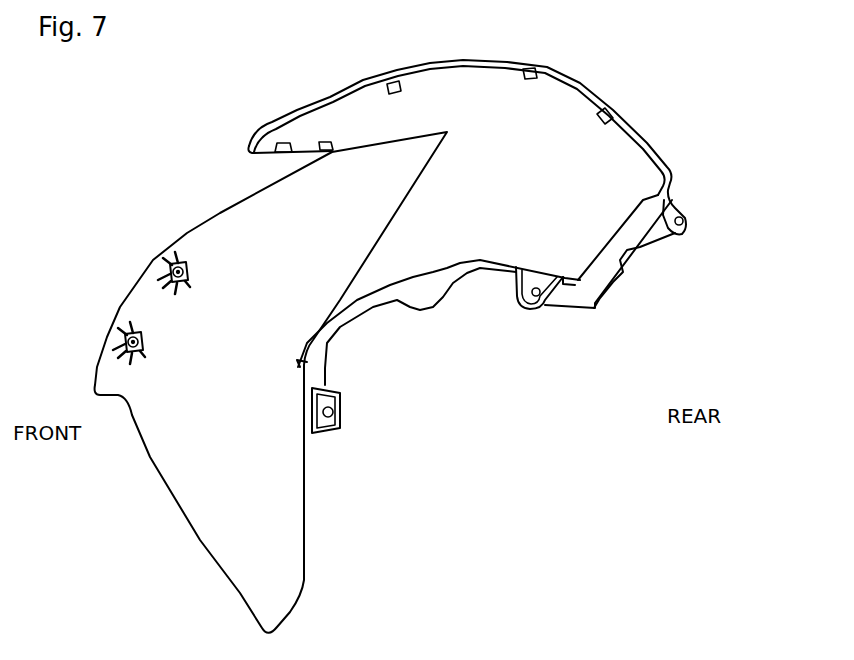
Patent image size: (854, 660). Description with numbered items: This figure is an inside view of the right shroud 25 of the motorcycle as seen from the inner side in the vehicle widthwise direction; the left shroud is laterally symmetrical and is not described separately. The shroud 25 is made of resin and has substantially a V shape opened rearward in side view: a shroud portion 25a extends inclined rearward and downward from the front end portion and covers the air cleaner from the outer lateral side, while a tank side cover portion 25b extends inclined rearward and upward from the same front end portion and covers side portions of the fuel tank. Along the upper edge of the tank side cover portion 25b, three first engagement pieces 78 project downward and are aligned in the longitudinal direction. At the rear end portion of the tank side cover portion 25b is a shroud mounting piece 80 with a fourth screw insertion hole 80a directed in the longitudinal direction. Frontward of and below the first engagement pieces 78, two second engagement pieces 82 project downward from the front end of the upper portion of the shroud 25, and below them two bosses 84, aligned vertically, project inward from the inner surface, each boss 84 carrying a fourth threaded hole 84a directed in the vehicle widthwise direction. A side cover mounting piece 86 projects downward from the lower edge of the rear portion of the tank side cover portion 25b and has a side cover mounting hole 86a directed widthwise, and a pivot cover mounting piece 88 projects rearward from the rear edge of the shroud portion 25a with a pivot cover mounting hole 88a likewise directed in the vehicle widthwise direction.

The shroud 25 is at (467, 117).
The shroud portion 25a is at (284, 518).
The tank side cover portion 25b is at (485, 145).
The first engagement pieces 78 is at (393, 82).
The shroud mounting piece 80 is at (655, 231).
The fourth screw insertion hole 80a is at (684, 221).
The second engagement pieces 82 is at (324, 141).
The bosses 84 is at (112, 283).
The fourth threaded hole 84a is at (66, 360).
The side cover mounting piece 86 is at (511, 318).
The side cover mounting hole 86a is at (536, 297).
The pivot cover mounting piece 88 is at (367, 419).
The pivot cover mounting hole 88a is at (334, 409).